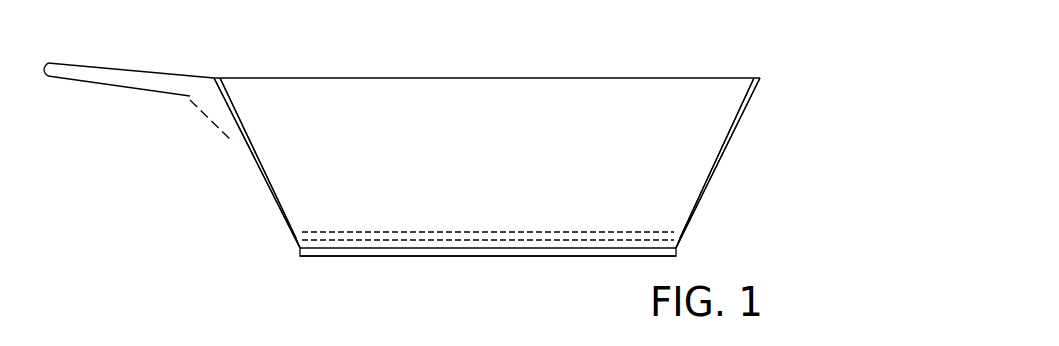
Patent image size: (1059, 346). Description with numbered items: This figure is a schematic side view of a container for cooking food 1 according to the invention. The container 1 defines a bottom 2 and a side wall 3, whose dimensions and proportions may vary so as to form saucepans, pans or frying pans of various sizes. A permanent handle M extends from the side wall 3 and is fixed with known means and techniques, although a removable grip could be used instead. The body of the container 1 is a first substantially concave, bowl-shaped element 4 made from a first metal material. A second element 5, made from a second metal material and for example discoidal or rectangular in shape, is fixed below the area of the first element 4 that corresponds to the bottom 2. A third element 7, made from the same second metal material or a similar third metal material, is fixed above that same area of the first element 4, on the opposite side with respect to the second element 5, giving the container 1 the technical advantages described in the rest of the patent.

The container for cooking food 1 is at (573, 64).
The bottom 2 is at (349, 258).
The side wall 3 is at (265, 181).
The first substantially concave element 4 is at (693, 157).
The second element 5 is at (443, 257).
The third element 7 is at (450, 232).
The permanent handle M is at (105, 78).